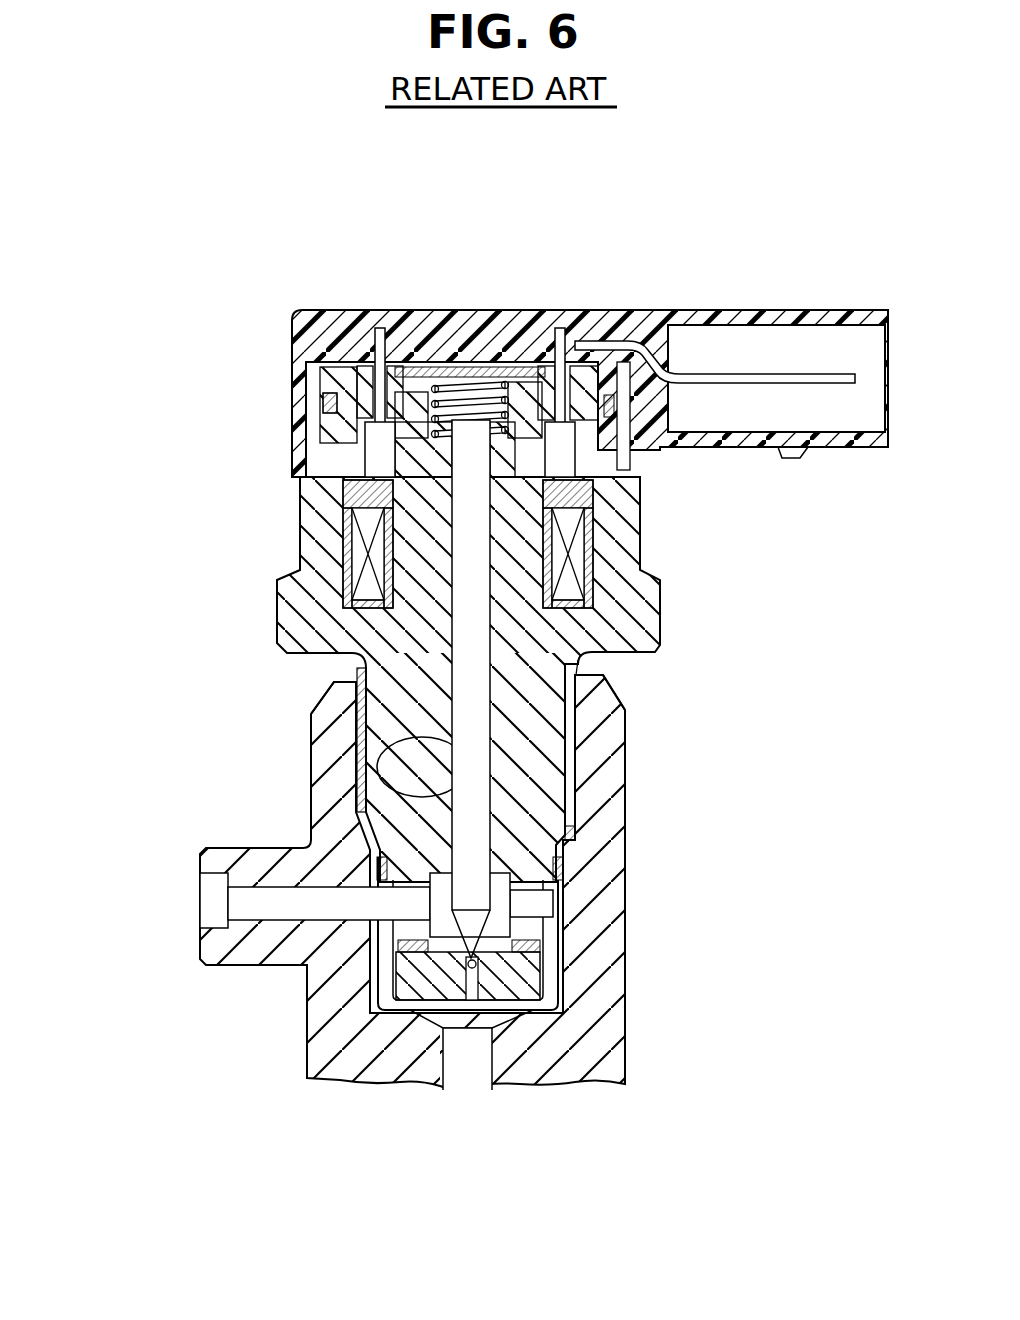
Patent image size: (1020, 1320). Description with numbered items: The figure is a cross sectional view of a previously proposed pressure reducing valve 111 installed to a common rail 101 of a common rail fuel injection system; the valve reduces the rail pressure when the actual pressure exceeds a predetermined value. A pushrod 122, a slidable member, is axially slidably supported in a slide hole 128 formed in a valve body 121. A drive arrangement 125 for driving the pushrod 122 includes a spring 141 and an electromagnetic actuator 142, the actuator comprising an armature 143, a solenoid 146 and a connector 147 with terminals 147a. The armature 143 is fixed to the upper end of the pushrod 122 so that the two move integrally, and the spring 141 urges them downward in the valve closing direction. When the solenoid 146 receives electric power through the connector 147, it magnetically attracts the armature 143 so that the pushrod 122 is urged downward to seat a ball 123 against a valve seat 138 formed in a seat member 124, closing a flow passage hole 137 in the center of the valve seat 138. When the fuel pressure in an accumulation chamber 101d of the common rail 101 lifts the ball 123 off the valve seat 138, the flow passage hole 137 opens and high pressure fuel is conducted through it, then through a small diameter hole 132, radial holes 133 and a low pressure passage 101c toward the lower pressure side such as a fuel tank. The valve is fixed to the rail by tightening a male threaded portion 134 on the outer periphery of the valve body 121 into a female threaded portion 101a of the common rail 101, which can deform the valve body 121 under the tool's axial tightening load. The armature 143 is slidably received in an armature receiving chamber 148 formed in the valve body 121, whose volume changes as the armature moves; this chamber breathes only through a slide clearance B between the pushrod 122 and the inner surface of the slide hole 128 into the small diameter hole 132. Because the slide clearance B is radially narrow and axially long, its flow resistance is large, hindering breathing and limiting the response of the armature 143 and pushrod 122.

The pressure reducing valve 111 is at (459, 688).
The common rail 101 is at (605, 1072).
The female threaded portion 101a is at (592, 702).
The low pressure passage 101c is at (250, 910).
The accumulation chamber 101d is at (457, 1070).
The valve body 121 is at (392, 722).
The pushrod 122 is at (467, 742).
The ball 123 is at (505, 1012).
The seat member 124 is at (520, 1000).
The drive arrangement 125 is at (314, 468).
The slide hole 128 is at (470, 784).
The small diameter hole 132 is at (558, 898).
The radial holes 133 is at (370, 935).
The male threaded portion 134 is at (572, 763).
The flow passage hole 137 is at (473, 1000).
The valve seat 138 is at (420, 1000).
The spring 141 is at (395, 380).
The electromagnetic actuator 142 is at (356, 468).
The armature 143 is at (305, 447).
The solenoid 146 is at (363, 523).
The connector 147 is at (769, 300).
The terminals 147a is at (826, 372).
The armature receiving chamber 148 is at (633, 450).
The slide clearance B is at (576, 668).